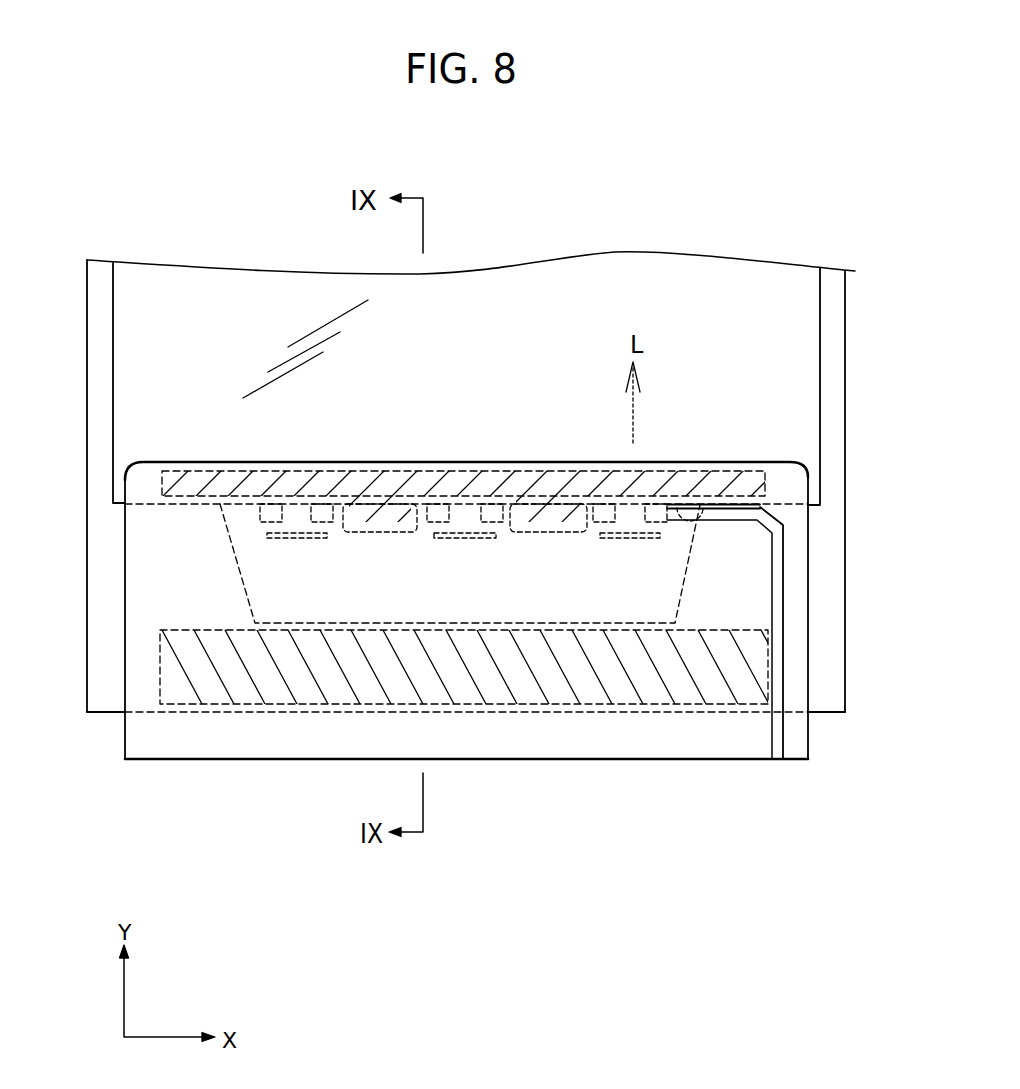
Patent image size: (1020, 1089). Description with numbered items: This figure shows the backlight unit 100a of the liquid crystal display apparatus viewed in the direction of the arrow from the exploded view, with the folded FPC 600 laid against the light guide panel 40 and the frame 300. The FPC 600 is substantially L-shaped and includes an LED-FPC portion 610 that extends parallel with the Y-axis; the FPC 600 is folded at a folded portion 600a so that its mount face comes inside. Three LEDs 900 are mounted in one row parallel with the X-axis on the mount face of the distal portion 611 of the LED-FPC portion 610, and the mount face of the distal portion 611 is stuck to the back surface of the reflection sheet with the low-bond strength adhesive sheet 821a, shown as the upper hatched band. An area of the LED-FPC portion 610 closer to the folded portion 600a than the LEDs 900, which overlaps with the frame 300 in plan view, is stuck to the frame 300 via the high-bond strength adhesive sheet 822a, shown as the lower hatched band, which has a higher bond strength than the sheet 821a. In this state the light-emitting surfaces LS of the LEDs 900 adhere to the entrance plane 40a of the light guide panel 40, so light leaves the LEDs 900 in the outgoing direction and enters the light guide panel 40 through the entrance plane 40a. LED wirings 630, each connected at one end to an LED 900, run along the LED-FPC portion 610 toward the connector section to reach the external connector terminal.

The light guide panel 40 is at (807, 343).
The entrance plane 40a is at (700, 545).
The frame 300 is at (107, 714).
The FPC 600 is at (124, 683).
The folded portion 600a is at (317, 761).
The LED-FPC portion 610 is at (180, 545).
The distal portion 611 is at (217, 461).
The LED wirings 630 is at (772, 730).
The low-bond strength adhesive sheet 821a is at (385, 486).
The high-bond strength adhesive sheet 822a is at (267, 704).
The LEDs 900 is at (292, 528).
The light-emitting surface LS is at (640, 500).
The backlight unit 100a is at (533, 808).